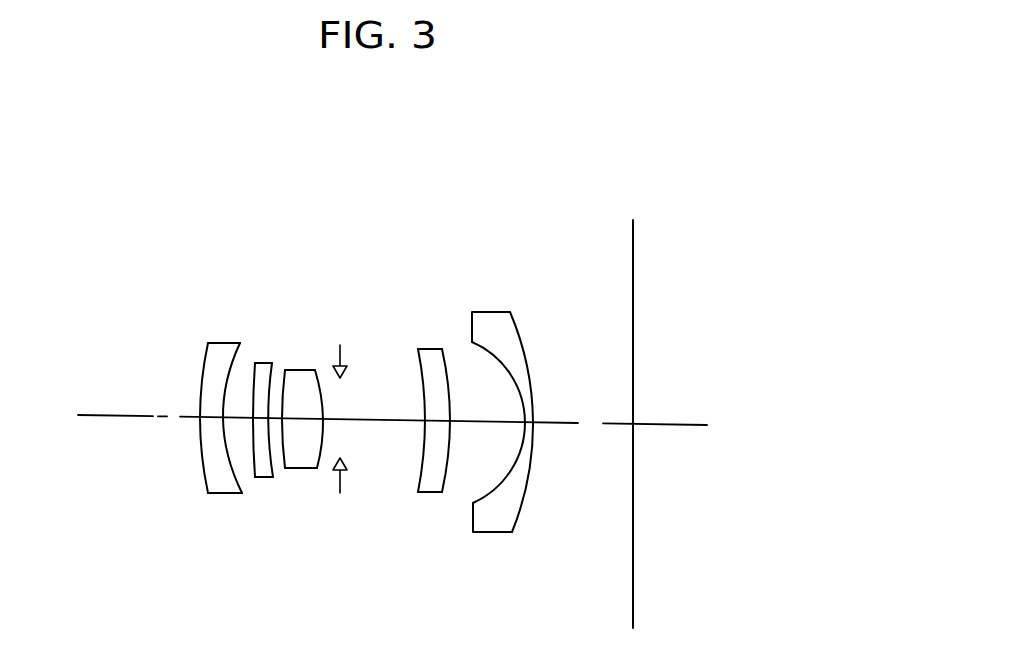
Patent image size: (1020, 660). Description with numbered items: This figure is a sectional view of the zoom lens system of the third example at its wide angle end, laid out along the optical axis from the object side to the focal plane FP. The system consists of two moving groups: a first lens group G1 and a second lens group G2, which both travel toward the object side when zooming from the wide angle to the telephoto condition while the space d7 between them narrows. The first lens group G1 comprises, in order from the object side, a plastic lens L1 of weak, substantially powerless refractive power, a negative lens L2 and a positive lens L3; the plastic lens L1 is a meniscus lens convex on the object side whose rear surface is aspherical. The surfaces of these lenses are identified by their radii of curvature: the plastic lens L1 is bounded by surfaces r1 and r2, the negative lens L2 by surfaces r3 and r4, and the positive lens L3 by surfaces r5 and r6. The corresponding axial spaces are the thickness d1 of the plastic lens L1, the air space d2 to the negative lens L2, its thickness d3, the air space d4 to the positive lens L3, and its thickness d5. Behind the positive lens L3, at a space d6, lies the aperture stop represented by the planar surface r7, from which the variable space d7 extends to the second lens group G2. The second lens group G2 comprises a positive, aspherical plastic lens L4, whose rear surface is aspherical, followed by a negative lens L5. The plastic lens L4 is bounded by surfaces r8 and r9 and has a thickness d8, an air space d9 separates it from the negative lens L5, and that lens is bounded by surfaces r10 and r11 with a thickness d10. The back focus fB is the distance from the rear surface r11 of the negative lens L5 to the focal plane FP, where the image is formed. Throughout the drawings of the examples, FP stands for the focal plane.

The first lens group G1 is at (352, 165).
The second lens group G2 is at (548, 168).
The plastic lens L1 is at (204, 334).
The negative lens L2 is at (271, 352).
The positive lens L3 is at (318, 320).
The plastic lens L4 is at (430, 364).
The negative lens L5 is at (523, 359).
The radius of curvature of the first lens surface r1 is at (203, 362).
The radius of curvature of the second lens surface r2 is at (231, 362).
The radius of curvature of the third lens surface r3 is at (257, 362).
The radius of curvature of the fourth lens surface r4 is at (274, 365).
The radius of curvature of the fifth lens surface r5 is at (288, 373).
The radius of curvature of the sixth lens surface r6 is at (318, 375).
The stop surface r7 is at (343, 396).
The radius of curvature of the eighth lens surface r8 is at (417, 370).
The radius of curvature of the ninth lens surface r9 is at (448, 362).
The radius of curvature of the tenth lens surface r10 is at (490, 342).
The radius of curvature of the eleventh lens surface r11 is at (527, 340).
The space between the first and second lens surfaces d1 is at (210, 422).
The space between the second and third lens surfaces d2 is at (247, 490).
The space between the third and fourth lens surfaces d3 is at (262, 478).
The space between the fourth and fifth lens surfaces d4 is at (283, 472).
The space between the fifth and sixth lens surfaces d5 is at (300, 438).
The space between the sixth and seventh lens surfaces d6 is at (330, 425).
The space between the first and second lens groups d7 is at (370, 438).
The space between the eighth and ninth lens surfaces d8 is at (428, 495).
The space between the ninth and tenth lens surfaces d9 is at (480, 443).
The space between the tenth and eleventh lens surfaces d10 is at (527, 483).
The back focus fB is at (583, 425).
The focal plane FP is at (637, 240).